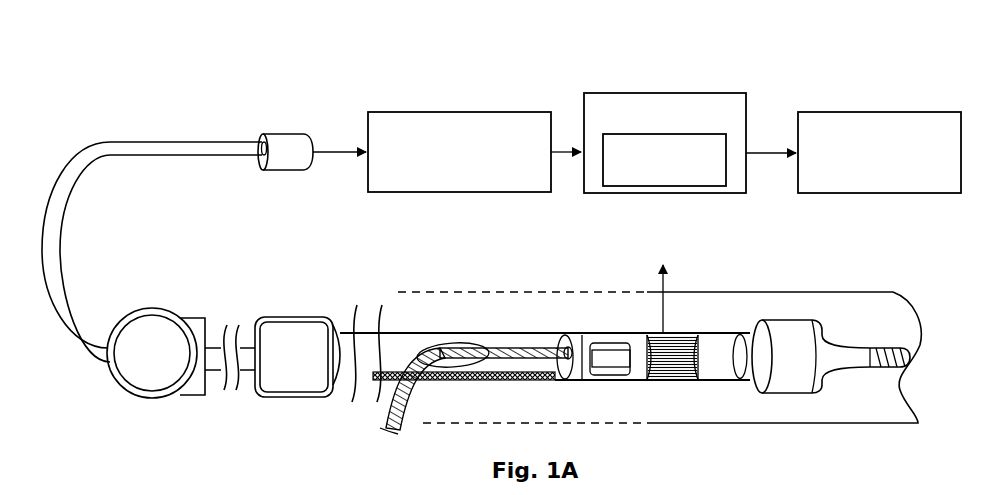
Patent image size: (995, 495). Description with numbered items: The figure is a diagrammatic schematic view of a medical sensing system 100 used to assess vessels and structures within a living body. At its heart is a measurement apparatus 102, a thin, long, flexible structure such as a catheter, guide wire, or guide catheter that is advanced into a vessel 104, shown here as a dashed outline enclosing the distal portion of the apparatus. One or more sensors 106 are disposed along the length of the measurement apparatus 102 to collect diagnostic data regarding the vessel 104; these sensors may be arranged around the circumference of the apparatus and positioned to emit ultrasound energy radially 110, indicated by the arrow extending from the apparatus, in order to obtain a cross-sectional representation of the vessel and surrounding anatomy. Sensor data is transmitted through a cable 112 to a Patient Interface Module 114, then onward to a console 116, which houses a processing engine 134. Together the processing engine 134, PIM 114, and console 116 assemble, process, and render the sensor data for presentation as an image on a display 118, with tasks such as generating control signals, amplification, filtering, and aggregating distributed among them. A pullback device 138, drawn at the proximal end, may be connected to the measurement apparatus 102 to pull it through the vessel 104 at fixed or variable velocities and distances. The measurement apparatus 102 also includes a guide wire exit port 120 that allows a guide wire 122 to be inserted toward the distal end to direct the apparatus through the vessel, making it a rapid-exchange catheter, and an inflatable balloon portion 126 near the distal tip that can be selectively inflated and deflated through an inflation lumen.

The medical sensing system 100 is at (563, 73).
The measurement apparatus 102 is at (840, 275).
The vessel 104 is at (740, 423).
The sensors 106 is at (671, 333).
The radial ultrasound energy direction 110 is at (667, 274).
The cable 112 is at (545, 383).
The Patient Interface Module (PIM) 114 is at (428, 112).
The console 116 is at (638, 93).
The display 118 is at (853, 112).
The guide wire exit port 120 is at (430, 335).
The guide wire 122 is at (892, 370).
The inflatable balloon portion 126 is at (757, 320).
The processing engine 134 is at (640, 186).
The pullback device 138 is at (160, 398).